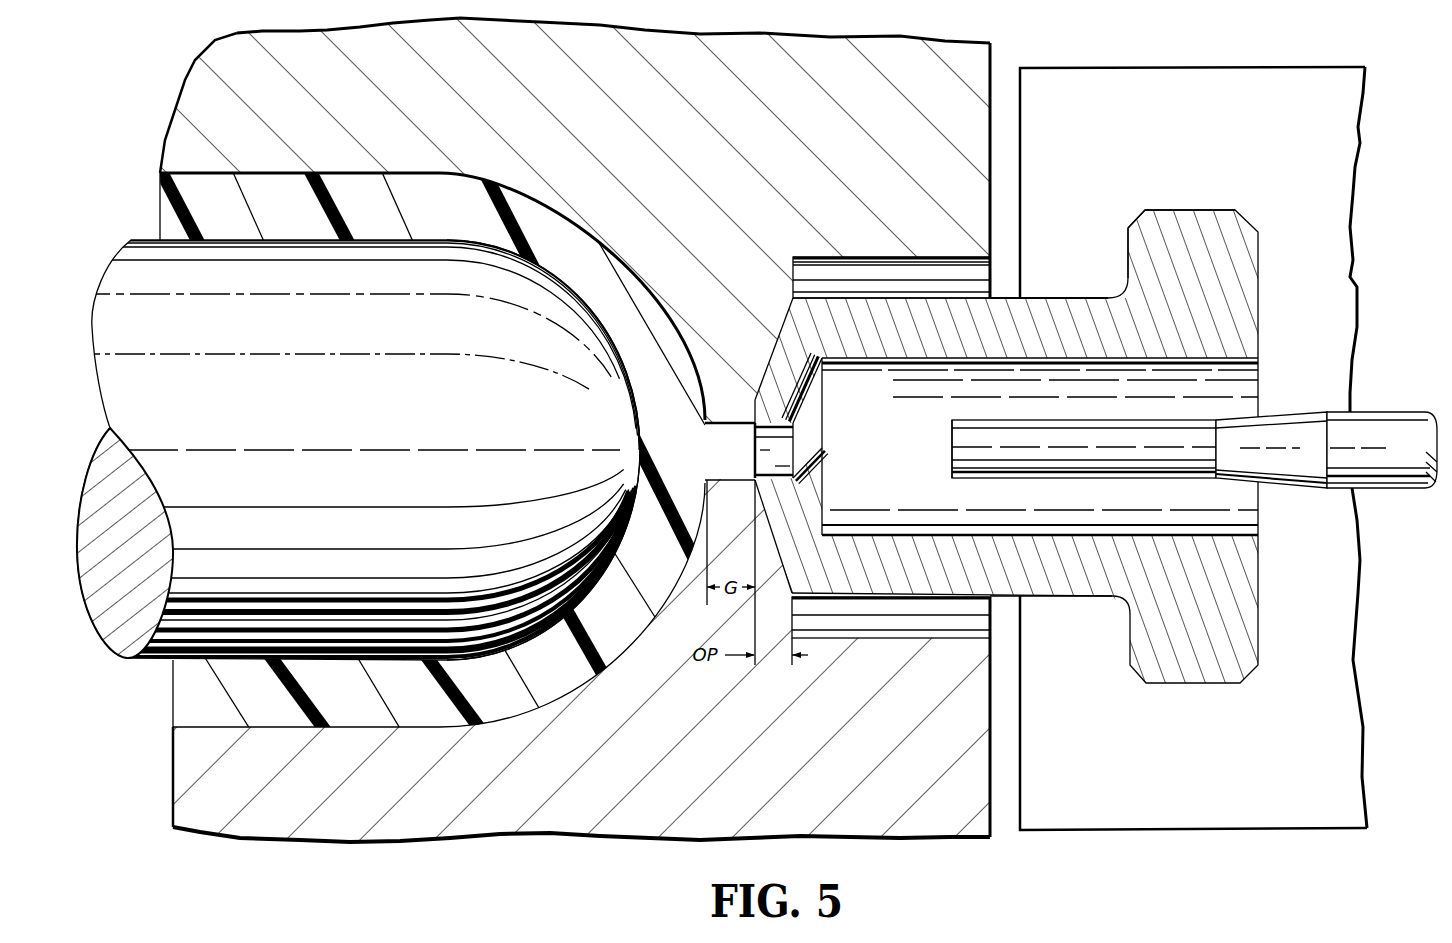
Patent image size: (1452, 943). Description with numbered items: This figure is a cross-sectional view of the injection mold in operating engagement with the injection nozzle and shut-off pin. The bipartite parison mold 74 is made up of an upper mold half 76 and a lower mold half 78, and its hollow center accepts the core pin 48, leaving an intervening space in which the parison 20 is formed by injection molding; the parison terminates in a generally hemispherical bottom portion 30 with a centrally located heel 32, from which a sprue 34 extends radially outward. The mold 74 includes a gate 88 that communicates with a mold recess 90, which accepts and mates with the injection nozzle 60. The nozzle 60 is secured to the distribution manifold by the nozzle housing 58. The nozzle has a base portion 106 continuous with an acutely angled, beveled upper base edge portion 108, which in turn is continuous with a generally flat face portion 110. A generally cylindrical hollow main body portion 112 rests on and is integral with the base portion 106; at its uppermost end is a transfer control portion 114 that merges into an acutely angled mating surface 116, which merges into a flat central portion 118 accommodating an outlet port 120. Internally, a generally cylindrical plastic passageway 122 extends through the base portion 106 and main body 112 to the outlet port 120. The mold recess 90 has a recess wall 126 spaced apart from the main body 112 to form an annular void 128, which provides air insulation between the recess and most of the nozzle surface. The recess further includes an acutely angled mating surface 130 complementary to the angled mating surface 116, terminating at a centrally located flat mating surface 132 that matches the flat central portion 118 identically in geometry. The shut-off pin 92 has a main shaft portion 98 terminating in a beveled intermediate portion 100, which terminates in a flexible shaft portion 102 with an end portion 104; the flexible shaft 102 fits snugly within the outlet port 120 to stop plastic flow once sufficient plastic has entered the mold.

The parison 20 is at (175, 213).
The hemispherical bottom portion 30 is at (627, 383).
The heel 32 is at (632, 455).
The sprue 34 is at (735, 450).
The core pin 48 is at (268, 425).
The nozzle housing 58 is at (1226, 64).
The injection nozzle 60 is at (1153, 427).
The parison mold 74 is at (208, 48).
The upper mold half 76 is at (170, 118).
The lower mold half 78 is at (172, 778).
The gate 88 is at (733, 421).
The mold recess 90 is at (1001, 426).
The shut-off pin 92 is at (1326, 432).
The main shaft portion 98 is at (1375, 413).
The beveled intermediate portion 100 is at (1278, 482).
The flexible shaft portion 102 is at (1076, 441).
The end portion 104 is at (952, 445).
The base portion 106 is at (1213, 210).
The beveled upper base edge portion 108 is at (1143, 213).
The flat face portion 110 is at (1126, 256).
The hollow main body portion 112 is at (1040, 297).
The transfer control portion 114 is at (784, 325).
The angled mating surface 116 is at (822, 386).
The flat central portion 118 is at (802, 415).
The outlet port 120 is at (780, 466).
The plastic passageway 122 is at (1262, 360).
The recess wall 126 is at (857, 258).
The annular void 128 is at (912, 278).
The angled mating surface 130 is at (770, 335).
The flat mating surface 132 is at (750, 405).